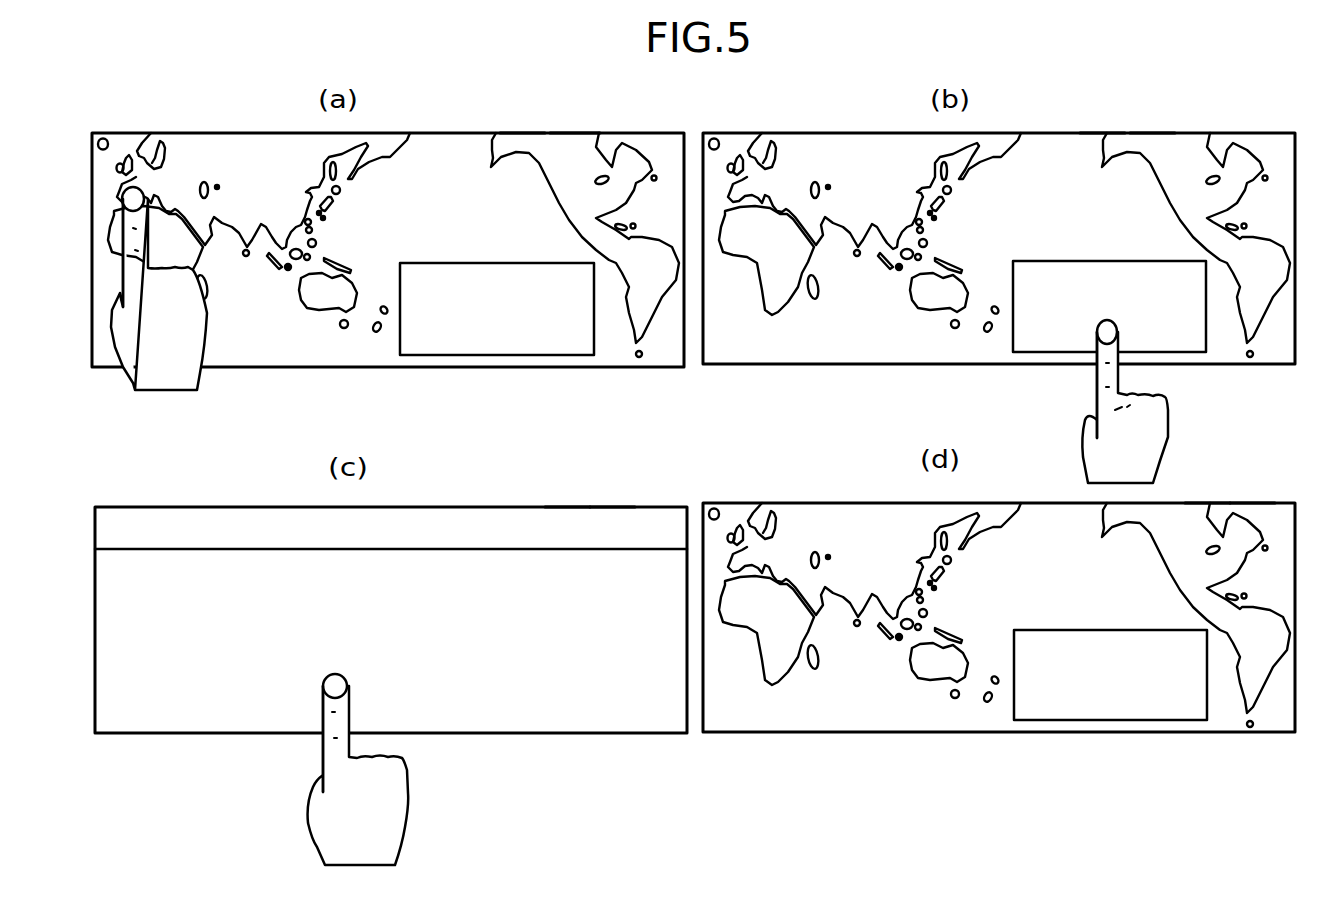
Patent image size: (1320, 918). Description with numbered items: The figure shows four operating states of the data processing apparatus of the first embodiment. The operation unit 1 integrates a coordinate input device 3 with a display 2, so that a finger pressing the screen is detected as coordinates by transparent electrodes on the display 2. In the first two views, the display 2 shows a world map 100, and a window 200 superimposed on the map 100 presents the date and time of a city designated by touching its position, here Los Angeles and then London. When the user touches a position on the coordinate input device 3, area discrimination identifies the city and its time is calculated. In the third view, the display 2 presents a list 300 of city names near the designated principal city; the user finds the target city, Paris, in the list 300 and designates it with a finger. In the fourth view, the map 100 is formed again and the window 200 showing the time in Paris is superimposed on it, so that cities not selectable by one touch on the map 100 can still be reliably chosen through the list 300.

The operation unit 1 is at (423, 132).
The display 2 is at (528, 132).
The coordinate input device 3 is at (567, 132).
The world map 100 is at (268, 355).
The window 200 is at (462, 262).
The list 300 is at (627, 727).